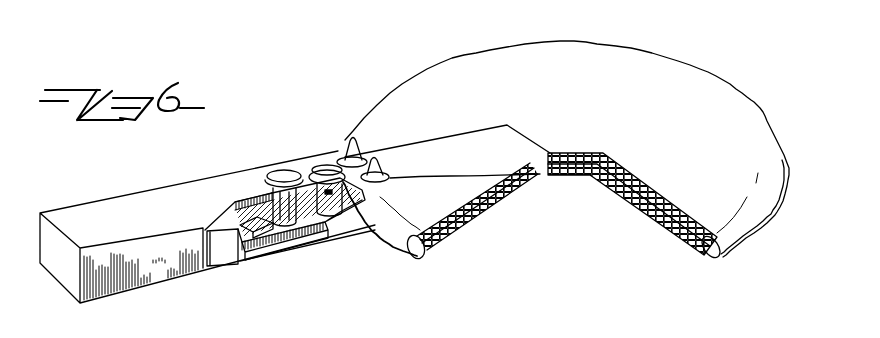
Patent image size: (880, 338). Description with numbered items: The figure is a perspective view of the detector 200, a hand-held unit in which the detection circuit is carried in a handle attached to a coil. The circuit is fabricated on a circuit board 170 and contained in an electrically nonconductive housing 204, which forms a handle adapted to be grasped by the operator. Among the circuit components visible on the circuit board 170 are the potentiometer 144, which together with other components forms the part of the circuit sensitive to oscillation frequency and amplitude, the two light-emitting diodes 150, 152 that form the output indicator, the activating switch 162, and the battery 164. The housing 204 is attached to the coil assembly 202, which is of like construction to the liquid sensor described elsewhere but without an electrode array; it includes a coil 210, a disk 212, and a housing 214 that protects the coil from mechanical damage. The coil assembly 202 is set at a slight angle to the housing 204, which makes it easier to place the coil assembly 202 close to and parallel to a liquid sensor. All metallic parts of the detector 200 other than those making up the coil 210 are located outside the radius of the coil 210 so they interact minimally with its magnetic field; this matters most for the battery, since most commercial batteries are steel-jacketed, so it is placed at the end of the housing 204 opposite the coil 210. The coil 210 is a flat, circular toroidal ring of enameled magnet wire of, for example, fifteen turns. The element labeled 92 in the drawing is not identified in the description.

The detector 200 is at (68, 186).
The housing 92 is at (152, 194).
The housing 204 is at (137, 289).
The battery 164 is at (228, 260).
The circuit board 170 is at (313, 228).
The activating switch 162 is at (278, 170).
The potentiometer 144 is at (326, 163).
The light-emitting diode 150 is at (350, 138).
The light-emitting diode 152 is at (388, 166).
The disk 212 is at (637, 198).
The coil 210 is at (712, 260).
The coil assembly 202 is at (657, 51).
The housing 214 is at (748, 99).